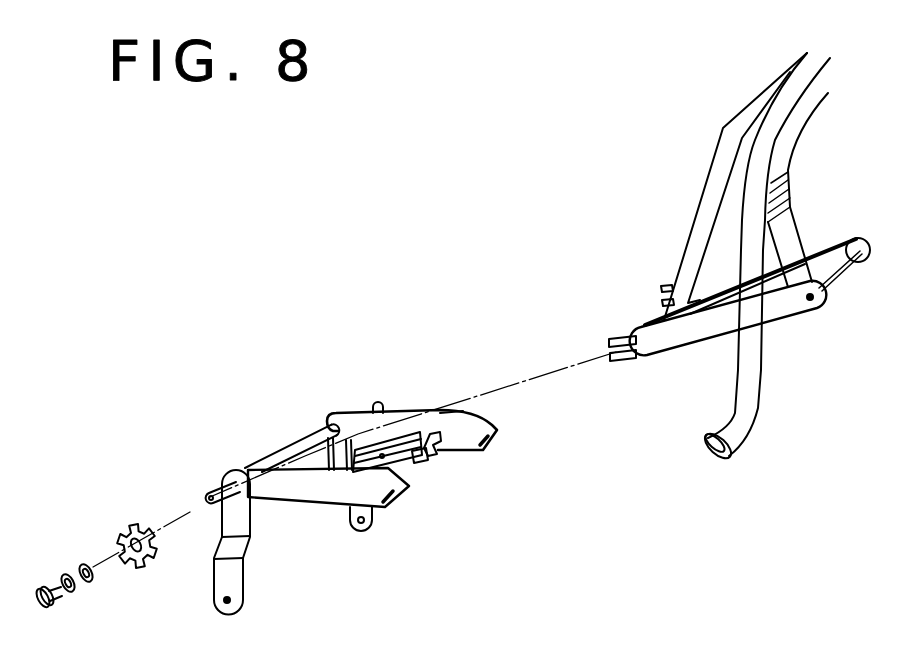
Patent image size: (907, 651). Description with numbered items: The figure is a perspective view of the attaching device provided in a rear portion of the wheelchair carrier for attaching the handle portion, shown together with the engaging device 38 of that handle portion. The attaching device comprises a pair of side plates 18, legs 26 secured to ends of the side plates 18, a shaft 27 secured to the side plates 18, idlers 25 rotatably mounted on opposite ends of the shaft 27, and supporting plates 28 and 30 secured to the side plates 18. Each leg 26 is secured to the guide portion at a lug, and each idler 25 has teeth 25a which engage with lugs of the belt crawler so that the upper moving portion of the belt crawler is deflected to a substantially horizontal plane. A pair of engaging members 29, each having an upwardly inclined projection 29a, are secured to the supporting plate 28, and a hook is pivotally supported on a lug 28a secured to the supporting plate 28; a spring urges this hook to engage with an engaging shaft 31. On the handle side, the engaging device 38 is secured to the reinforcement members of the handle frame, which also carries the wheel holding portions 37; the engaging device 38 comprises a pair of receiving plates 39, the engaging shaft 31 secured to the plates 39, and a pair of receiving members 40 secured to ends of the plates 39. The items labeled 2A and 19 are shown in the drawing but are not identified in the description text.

The seat frame assembly 2A is at (323, 384).
The side plate 18 is at (340, 508).
The mounting lug 19 is at (387, 507).
The idler 25 is at (155, 533).
The teeth 25a is at (127, 538).
The leg 26 is at (221, 532).
The shaft 27 is at (303, 445).
The supporting plate 28 is at (403, 478).
The lug 28a is at (412, 470).
The engaging member 29 is at (436, 450).
The upwardly inclined projection 29a is at (465, 410).
The supporting plate 30 is at (378, 462).
The engaging shaft 31 is at (830, 277).
The wheel holding portion 37 is at (735, 436).
The engaging device 38 is at (691, 168).
The receiving plate 39 is at (846, 241).
The receiving member 40 is at (622, 339).